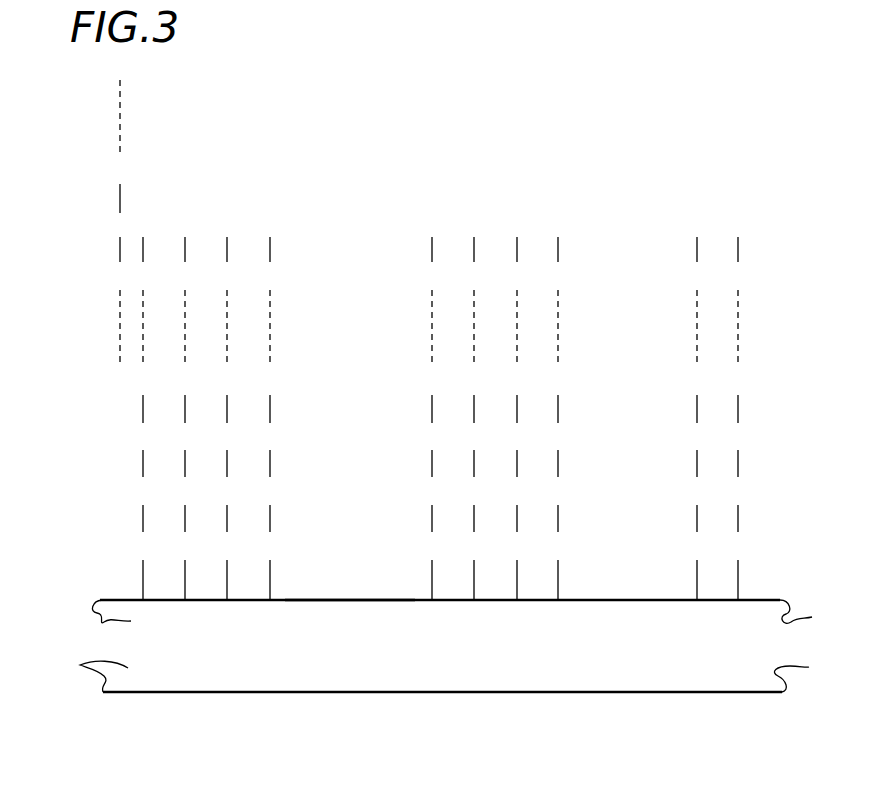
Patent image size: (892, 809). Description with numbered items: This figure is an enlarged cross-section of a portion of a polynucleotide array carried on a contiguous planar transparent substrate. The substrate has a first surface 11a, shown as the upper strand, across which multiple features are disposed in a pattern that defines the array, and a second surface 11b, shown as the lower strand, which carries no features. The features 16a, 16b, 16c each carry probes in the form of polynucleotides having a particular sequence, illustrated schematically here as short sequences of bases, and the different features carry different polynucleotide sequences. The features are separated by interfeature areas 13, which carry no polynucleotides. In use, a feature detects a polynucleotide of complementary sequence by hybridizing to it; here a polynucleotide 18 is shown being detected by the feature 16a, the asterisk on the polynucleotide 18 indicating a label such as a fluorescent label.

The first surface 11a is at (122, 600).
The second surface 11b is at (143, 692).
The interfeature areas 13 is at (375, 600).
The feature 16a is at (135, 605).
The feature 16b is at (420, 605).
The feature 16c is at (682, 605).
The polynucleotide 18 is at (122, 188).